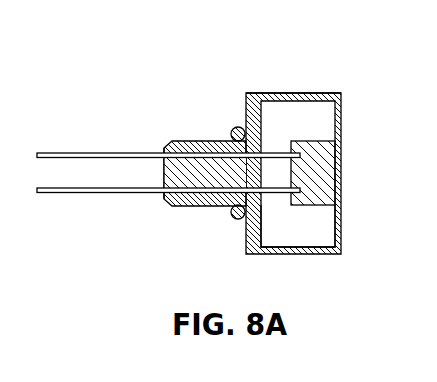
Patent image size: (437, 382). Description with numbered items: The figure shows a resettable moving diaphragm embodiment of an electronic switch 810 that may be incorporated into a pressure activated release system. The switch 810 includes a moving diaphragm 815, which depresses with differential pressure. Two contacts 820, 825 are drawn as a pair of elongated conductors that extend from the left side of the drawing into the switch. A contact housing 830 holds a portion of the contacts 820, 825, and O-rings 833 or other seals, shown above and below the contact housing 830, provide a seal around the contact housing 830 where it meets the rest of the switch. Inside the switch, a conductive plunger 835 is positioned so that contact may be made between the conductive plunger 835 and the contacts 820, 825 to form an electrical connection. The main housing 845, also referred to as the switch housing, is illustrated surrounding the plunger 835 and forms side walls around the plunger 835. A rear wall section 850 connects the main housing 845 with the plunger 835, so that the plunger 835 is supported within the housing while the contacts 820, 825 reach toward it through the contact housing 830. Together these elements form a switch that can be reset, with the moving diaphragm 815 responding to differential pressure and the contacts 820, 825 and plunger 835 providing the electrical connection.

The switch 810 is at (145, 75).
The moving diaphragm 815 is at (316, 229).
The contact 820 is at (107, 150).
The contact 825 is at (98, 195).
The contact housing 830 is at (212, 138).
The O-rings 833 is at (230, 222).
The conductive plunger 835 is at (335, 172).
The main housing 845 is at (293, 90).
The rear wall section 850 is at (345, 124).